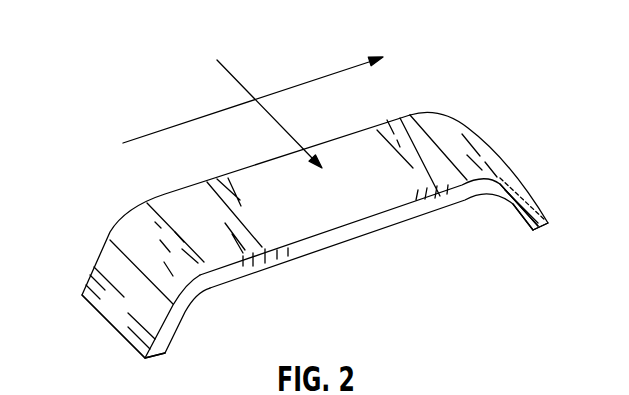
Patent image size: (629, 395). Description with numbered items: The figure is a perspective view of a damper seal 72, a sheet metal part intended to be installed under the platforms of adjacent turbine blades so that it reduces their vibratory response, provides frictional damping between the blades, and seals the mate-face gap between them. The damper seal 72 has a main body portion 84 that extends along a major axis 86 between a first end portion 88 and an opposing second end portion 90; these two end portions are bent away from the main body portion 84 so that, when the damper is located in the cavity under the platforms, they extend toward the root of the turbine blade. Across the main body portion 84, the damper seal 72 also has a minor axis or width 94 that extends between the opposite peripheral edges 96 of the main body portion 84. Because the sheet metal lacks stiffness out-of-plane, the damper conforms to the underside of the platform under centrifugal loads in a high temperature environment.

The damper seal 72 is at (503, 113).
The main body portion 84 is at (180, 200).
The major axis 86 is at (307, 81).
The first end portion 88 is at (80, 320).
The second end portion 90 is at (546, 191).
The minor axis 94 is at (221, 68).
The peripheral edges 96 is at (353, 134).